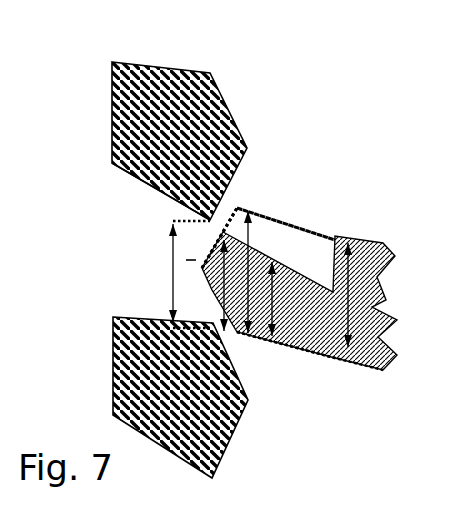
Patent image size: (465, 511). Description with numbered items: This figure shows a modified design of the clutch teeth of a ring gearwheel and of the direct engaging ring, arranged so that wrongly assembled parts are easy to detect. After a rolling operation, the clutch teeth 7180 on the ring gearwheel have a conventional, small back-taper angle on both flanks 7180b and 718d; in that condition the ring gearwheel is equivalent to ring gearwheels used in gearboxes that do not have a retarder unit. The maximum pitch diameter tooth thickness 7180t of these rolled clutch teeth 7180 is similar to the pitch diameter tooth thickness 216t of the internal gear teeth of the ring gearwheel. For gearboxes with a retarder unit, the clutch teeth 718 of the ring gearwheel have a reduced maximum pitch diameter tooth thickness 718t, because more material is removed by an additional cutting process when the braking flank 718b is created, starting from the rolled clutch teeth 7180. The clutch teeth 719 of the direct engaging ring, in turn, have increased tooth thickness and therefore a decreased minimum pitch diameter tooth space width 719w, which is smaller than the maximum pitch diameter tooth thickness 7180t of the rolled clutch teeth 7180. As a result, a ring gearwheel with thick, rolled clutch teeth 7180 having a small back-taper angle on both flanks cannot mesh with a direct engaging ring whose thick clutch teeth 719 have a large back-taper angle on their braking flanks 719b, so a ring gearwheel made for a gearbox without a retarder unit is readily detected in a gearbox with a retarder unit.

The clutch teeth of the direct engaging ring 719 is at (157, 128).
The braking flanks 719b is at (152, 182).
The minimum pitch diameter tooth space width 719w is at (171, 287).
The clutch teeth of the ring gearwheel 718 is at (348, 349).
The maximum pitch diameter tooth thickness 718t is at (222, 300).
The braking flank 718b is at (271, 338).
The flank 718d is at (292, 344).
The rolled clutch teeth 7180 is at (310, 252).
The flank 7180b is at (273, 219).
The maximum pitch diameter tooth thickness 7180t is at (208, 277).
The pitch diameter tooth thickness 216t is at (388, 244).